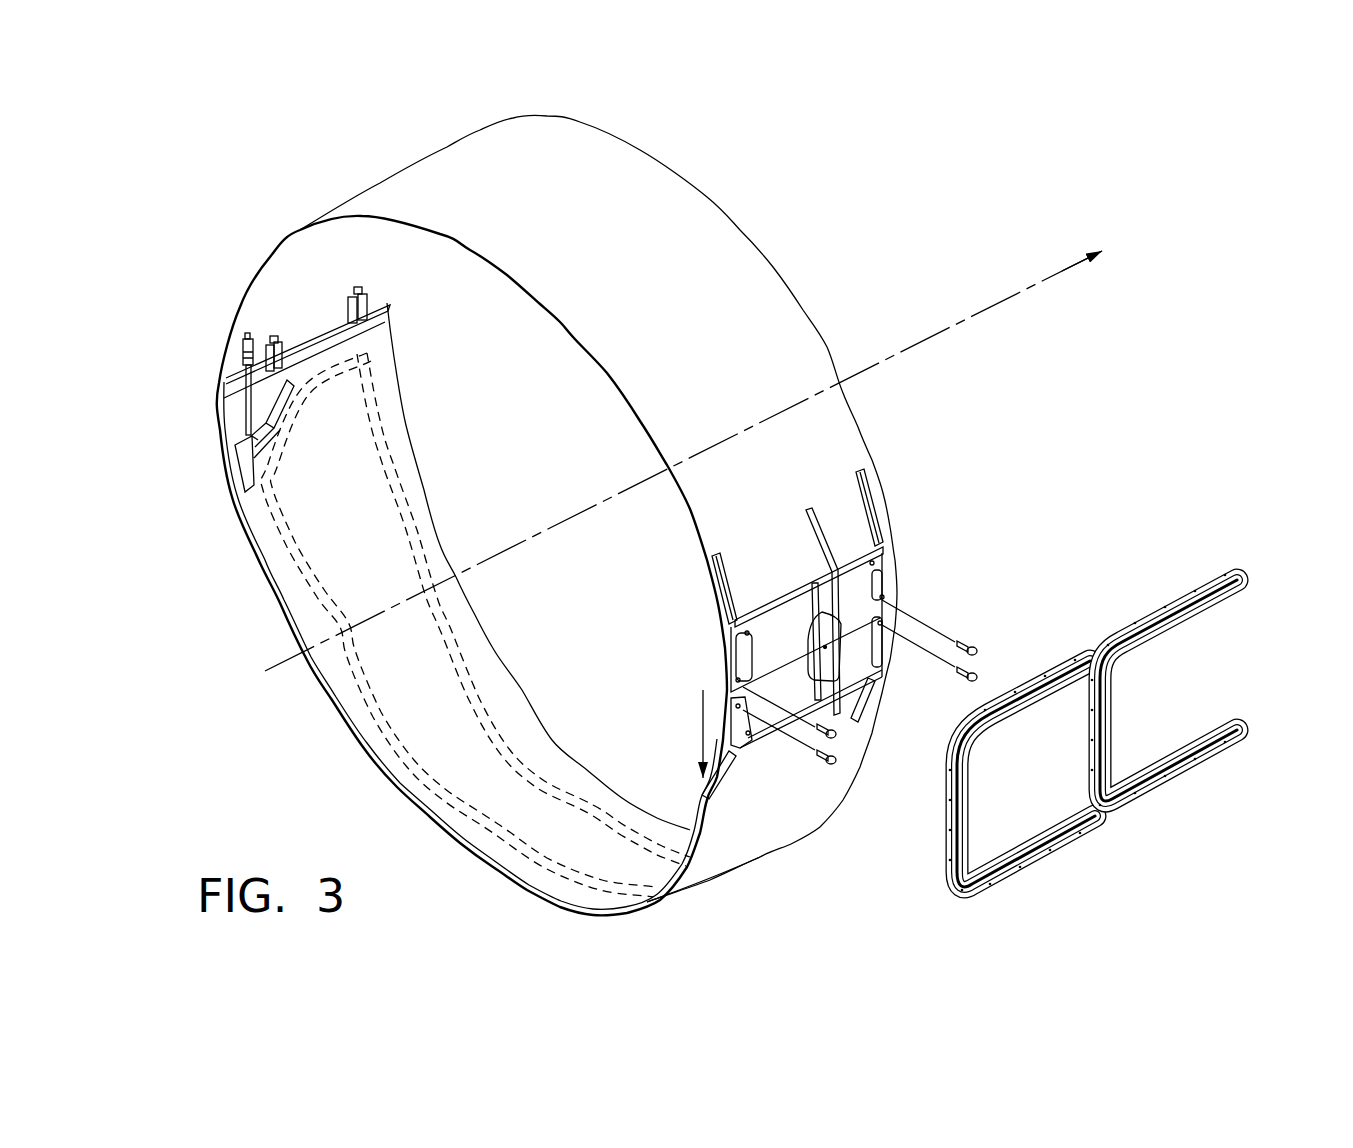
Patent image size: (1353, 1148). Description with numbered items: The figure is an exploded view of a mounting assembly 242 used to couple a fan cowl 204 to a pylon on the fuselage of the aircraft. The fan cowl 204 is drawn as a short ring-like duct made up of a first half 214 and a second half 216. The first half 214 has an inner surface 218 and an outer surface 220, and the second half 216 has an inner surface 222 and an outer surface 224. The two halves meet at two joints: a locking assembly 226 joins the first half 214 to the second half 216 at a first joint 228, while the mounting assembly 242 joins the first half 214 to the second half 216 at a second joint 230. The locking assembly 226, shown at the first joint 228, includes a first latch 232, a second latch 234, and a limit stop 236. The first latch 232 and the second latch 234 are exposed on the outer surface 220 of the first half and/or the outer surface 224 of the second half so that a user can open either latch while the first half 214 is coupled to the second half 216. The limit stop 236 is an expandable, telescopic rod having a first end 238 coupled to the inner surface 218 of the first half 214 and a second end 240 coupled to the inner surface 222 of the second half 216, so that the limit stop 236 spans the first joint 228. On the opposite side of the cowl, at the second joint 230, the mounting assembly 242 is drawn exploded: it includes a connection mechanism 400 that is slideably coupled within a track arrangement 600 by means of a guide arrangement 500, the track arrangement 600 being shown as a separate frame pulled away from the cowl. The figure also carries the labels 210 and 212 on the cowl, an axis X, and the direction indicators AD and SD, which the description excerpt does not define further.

The fan cowl 204 is at (290, 162).
The duct wall 210 is at (806, 311).
The first end rim 212 is at (252, 283).
The first half 214 is at (617, 172).
The second half 216 is at (715, 884).
The inner surface 218 is at (346, 286).
The outer surface 220 is at (688, 304).
The inner surface 222 is at (418, 644).
The outer surface 224 is at (794, 814).
The locking assembly 226 is at (288, 285).
The first joint 228 is at (388, 306).
The second joint 230 is at (862, 635).
The first latch 232 is at (368, 290).
The second latch 234 is at (270, 336).
The limit stop 236 is at (236, 382).
The first end 238 is at (247, 336).
The second end 240 is at (250, 413).
The mounting assembly 242 is at (985, 505).
The connection mechanism 400 is at (797, 515).
The guide arrangement 500 is at (946, 676).
The track arrangement 600 is at (1108, 852).
The axis X is at (290, 658).
The axial direction AD is at (1063, 273).
The span direction SD is at (703, 724).